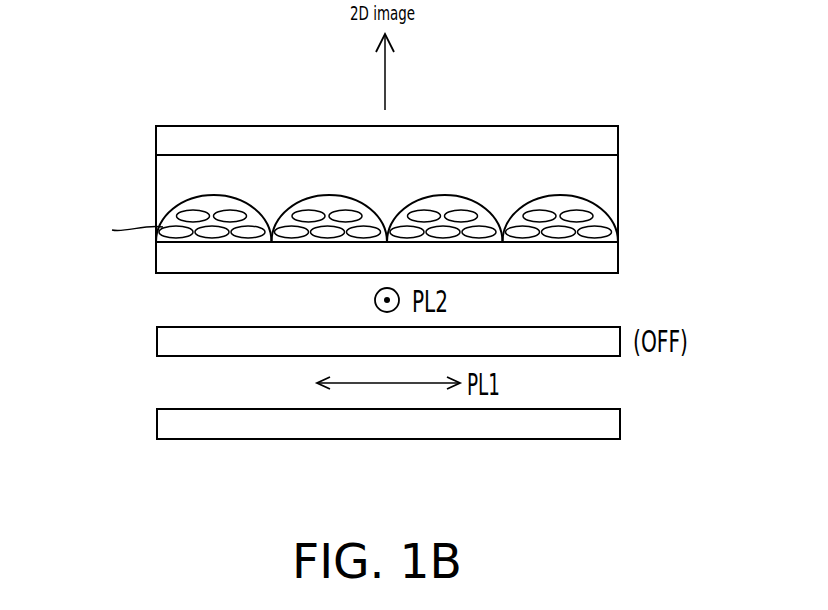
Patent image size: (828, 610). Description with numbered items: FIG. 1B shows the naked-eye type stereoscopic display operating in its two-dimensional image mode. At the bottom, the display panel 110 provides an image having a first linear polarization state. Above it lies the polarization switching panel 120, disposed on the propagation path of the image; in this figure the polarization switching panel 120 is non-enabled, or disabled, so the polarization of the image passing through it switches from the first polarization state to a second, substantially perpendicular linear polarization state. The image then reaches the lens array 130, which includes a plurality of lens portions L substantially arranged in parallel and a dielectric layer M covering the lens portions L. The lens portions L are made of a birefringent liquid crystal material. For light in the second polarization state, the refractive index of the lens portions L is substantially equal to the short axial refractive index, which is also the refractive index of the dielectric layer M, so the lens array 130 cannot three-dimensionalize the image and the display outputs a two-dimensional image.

The lens array 130 is at (406, 199).
The dielectric layer M is at (595, 178).
The lens portions L is at (412, 233).
The polarization switching panel 120 is at (178, 342).
The display panel 110 is at (178, 426).